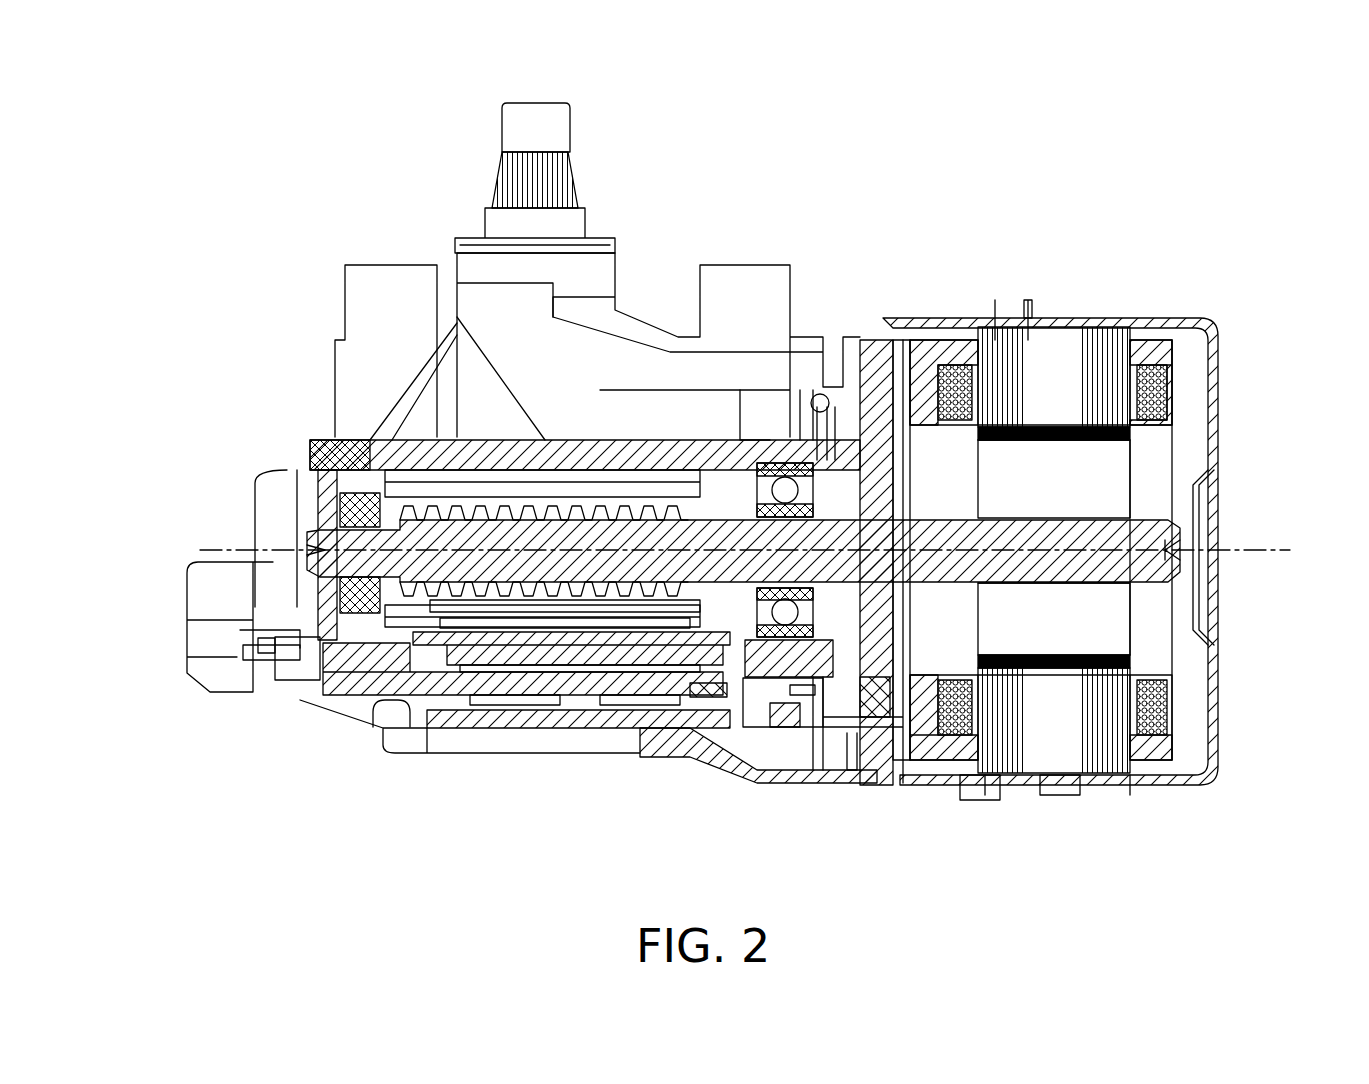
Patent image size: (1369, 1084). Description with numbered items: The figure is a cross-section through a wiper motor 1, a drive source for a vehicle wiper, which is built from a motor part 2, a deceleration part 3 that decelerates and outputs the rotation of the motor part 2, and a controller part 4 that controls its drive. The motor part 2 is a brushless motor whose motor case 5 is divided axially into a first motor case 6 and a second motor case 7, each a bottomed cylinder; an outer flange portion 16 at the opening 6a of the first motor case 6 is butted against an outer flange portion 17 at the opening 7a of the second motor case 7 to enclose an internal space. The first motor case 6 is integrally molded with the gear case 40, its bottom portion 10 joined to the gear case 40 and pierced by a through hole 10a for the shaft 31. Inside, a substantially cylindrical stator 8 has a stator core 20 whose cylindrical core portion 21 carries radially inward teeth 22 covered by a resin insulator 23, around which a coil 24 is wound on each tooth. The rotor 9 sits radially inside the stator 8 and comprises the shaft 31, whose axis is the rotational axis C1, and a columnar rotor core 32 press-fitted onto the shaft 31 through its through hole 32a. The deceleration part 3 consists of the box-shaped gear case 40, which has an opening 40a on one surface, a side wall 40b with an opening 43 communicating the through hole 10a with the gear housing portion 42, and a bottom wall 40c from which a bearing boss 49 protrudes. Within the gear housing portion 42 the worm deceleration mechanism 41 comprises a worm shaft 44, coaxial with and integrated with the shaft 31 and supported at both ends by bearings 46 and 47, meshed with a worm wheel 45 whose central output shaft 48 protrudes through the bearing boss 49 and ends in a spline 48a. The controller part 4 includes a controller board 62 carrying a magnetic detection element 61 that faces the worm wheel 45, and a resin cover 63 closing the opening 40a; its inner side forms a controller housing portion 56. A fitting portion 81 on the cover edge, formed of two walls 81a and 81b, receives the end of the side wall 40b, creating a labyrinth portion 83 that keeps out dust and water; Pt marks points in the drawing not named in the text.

The wiper motor 1 is at (1140, 130).
The motor part 2 is at (1120, 275).
The deceleration part 3 is at (420, 413).
The controller part 4 is at (665, 700).
The motor case 5 is at (1105, 160).
The first motor case 6 is at (940, 320).
The second motor case 7 is at (1108, 320).
The stator 8 is at (1130, 333).
The rotor 9 is at (1180, 457).
The bottom portion 10 is at (830, 385).
The through hole 10a is at (960, 482).
The outer flange portion 16 is at (995, 300).
The outer flange portion 17 is at (1028, 300).
The stator core 20 is at (1283, 228).
The core portion 21 is at (1115, 310).
The teeth 22 is at (1160, 342).
The insulator 23 is at (1160, 660).
The coil 24 is at (1150, 690).
The shaft 31 is at (1100, 590).
The rotor core 32 is at (1115, 492).
The through hole 32a is at (1130, 570).
The gear case 40 is at (288, 535).
The opening 40a is at (292, 653).
The side wall 40b is at (826, 710).
The bottom wall 40c is at (588, 435).
The worm deceleration mechanism 41 is at (449, 205).
The gear housing portion 42 is at (360, 455).
The opening 43 is at (785, 460).
The worm shaft 44 is at (577, 513).
The worm wheel 45 is at (509, 503).
The bearing 46 is at (761, 405).
The bearing 47 is at (362, 504).
The output shaft 48 is at (572, 130).
The spline 48a is at (582, 182).
The bearing boss 49 is at (623, 262).
The controller housing portion 56 is at (417, 700).
The magnetic detection element 61 is at (530, 635).
The controller board 62 is at (515, 650).
The cover 63 is at (584, 725).
The fitting portion 81 is at (115, 657).
The wall 81a is at (250, 650).
The wall 81b is at (262, 640).
The labyrinth portion 83 is at (267, 653).
The opening 6a is at (1035, 780).
The opening 7a is at (1075, 772).
The contact point Pt is at (1130, 775).
The rotational axis C1 is at (1245, 550).